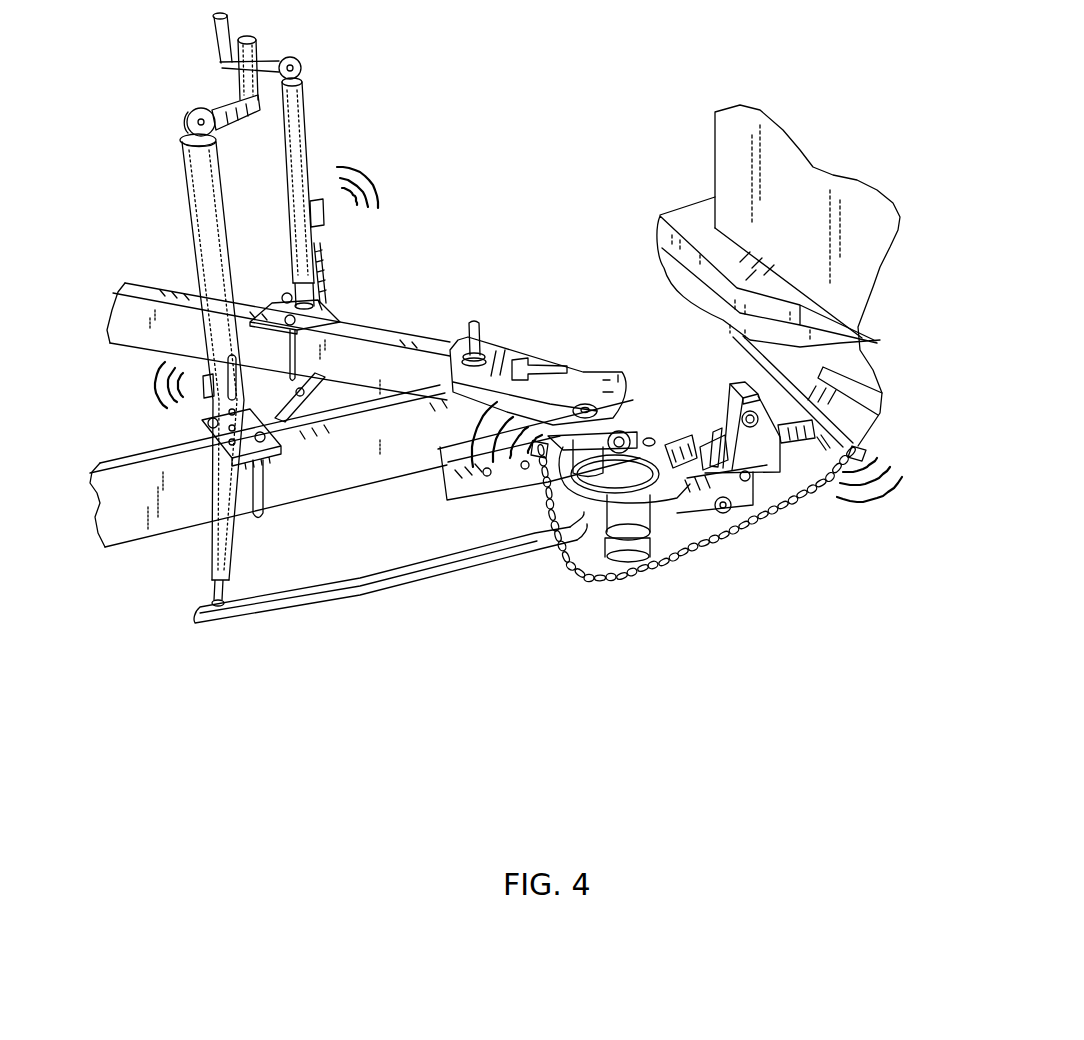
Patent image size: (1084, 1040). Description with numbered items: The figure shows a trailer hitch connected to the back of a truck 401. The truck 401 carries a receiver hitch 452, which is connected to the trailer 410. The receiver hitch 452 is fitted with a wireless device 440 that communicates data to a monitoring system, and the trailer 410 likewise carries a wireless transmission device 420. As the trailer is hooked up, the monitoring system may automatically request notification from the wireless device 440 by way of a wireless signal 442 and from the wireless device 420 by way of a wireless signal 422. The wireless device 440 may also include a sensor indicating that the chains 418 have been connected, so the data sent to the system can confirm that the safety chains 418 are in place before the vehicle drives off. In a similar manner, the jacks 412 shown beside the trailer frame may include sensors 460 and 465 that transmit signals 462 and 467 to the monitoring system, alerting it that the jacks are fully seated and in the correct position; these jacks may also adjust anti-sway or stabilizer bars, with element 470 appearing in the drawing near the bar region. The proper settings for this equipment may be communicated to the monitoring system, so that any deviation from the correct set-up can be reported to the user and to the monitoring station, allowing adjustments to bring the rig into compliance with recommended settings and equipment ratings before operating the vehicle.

The truck 401 is at (733, 168).
The trailer 410 is at (387, 347).
The jacks 412 is at (297, 163).
The safety chains 418 is at (643, 573).
The wireless transmission device 420 is at (537, 444).
The wireless signal 422 is at (477, 432).
The wireless device 440 is at (852, 447).
The wireless signal 442 is at (872, 497).
The receiver hitch 452 is at (737, 393).
The sensor 460 is at (323, 217).
The signal 462 is at (377, 187).
The sensor 465 is at (203, 387).
The signal 467 is at (158, 376).
The stabilizer bar 470 is at (390, 595).